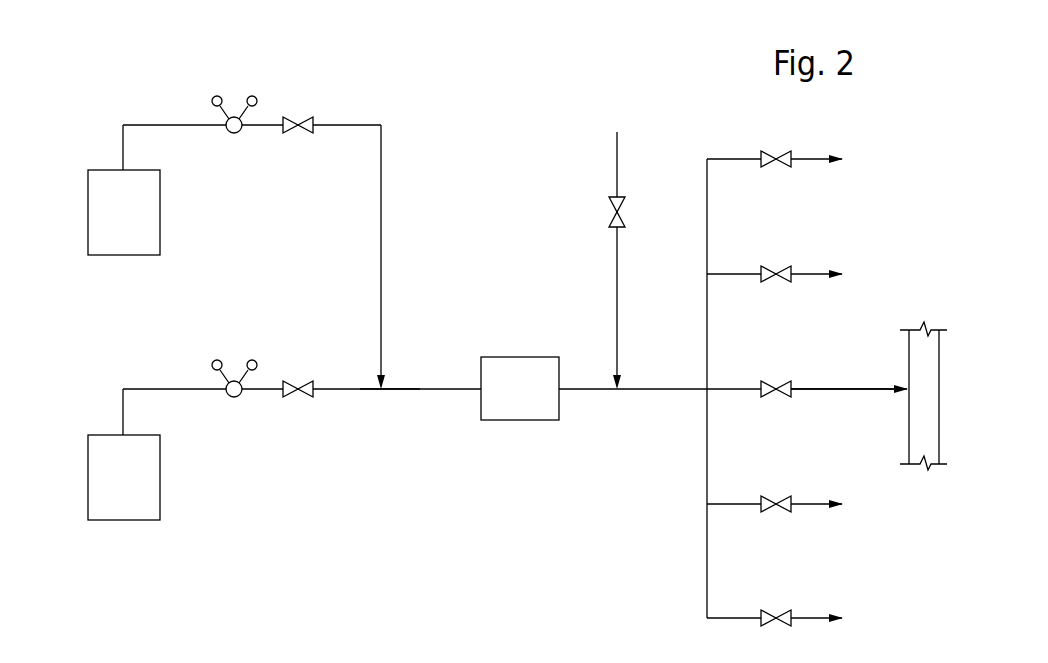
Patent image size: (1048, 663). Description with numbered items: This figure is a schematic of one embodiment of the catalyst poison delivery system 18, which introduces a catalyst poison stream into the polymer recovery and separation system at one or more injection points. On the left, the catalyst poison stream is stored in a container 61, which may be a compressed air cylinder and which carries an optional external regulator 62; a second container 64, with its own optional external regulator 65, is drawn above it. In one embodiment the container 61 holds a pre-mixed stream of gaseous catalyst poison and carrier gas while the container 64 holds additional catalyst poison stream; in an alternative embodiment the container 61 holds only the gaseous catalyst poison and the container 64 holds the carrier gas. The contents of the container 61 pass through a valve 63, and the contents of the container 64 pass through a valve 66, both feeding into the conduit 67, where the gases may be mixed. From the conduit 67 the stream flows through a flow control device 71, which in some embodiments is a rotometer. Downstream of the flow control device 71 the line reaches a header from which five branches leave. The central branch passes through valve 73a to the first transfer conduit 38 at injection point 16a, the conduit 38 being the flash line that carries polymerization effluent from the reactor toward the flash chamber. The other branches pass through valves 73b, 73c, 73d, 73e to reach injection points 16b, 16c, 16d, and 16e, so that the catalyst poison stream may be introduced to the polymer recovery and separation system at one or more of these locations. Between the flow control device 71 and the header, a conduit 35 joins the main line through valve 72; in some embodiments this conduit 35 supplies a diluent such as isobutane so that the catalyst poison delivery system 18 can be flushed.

The catalyst poison delivery system 18 is at (382, 582).
The container 64 is at (234, 190).
The container 61 is at (124, 454).
The external regulator 65 is at (234, 134).
The external regulator 62 is at (234, 398).
The valve 66 is at (292, 119).
The valve 63 is at (292, 383).
The conduit 67 is at (391, 391).
The flow control device 71 is at (520, 388).
The conduit 35 is at (604, 131).
The valve 72 is at (611, 210).
The injection point 16a is at (907, 384).
The injection point 16b is at (796, 160).
The injection point 16c is at (796, 275).
The injection point 16d is at (796, 506).
The injection point 16e is at (796, 621).
The valve 73a is at (774, 397).
The valve 73b is at (774, 167).
The valve 73c is at (774, 282).
The valve 73d is at (774, 512).
The valve 73e is at (774, 626).
The first transfer conduit 38 is at (939, 425).